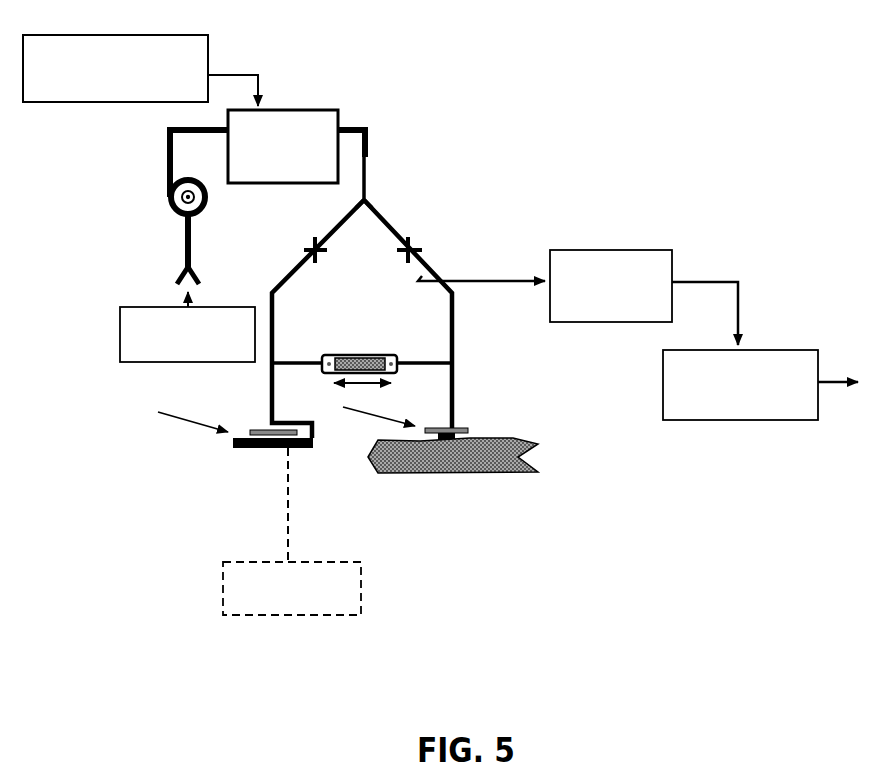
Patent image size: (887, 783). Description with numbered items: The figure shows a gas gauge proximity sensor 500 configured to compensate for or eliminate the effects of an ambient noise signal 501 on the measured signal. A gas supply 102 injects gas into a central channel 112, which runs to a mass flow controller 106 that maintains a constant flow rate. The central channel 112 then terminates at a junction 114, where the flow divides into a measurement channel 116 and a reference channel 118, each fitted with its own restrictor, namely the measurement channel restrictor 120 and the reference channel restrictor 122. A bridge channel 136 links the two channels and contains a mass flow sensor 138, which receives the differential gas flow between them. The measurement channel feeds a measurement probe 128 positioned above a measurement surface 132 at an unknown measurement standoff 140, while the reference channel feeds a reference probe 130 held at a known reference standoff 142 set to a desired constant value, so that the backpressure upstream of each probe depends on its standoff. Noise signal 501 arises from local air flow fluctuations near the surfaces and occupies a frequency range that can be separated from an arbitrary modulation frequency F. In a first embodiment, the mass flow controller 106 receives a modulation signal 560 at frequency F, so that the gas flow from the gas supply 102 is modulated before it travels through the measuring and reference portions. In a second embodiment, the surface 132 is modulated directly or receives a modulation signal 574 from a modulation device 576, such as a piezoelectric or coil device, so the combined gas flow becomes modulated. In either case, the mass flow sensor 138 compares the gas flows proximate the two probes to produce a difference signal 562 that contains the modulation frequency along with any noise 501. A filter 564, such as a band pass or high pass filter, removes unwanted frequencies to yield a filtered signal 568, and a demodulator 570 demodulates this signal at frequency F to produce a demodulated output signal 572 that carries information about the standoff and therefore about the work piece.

The sensor 500 is at (707, 76).
The modulation signal 560 is at (258, 75).
The mass flow controller 106 is at (305, 110).
The central channel 112 is at (368, 148).
The gas supply 102 is at (120, 337).
The junction 114 is at (363, 200).
The measurement channel 116 is at (342, 222).
The reference channel 118 is at (395, 237).
The measurement channel restrictor 120 is at (312, 250).
The reference channel restrictor 122 is at (412, 248).
The bridge channel 136 is at (308, 362).
The mass flow sensor 138 is at (345, 357).
The measurement probe 128 is at (252, 429).
The measurement surface 132 is at (247, 449).
The reference probe 130 is at (436, 427).
The measurement standoff 140 is at (175, 414).
The reference standoff 142 is at (361, 411).
The ambient noise signal 501 is at (478, 429).
The difference signal 562 is at (520, 278).
The filter 564 is at (672, 250).
The filtered signal 568 is at (738, 282).
The demodulator 570 is at (778, 350).
The demodulated output signal 572 is at (832, 377).
The modulation signal 574 is at (288, 545).
The modulation device 576 is at (250, 616).